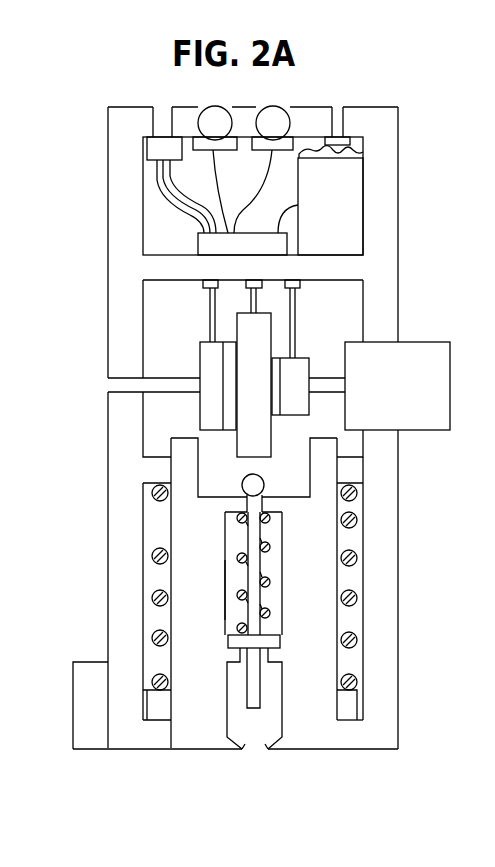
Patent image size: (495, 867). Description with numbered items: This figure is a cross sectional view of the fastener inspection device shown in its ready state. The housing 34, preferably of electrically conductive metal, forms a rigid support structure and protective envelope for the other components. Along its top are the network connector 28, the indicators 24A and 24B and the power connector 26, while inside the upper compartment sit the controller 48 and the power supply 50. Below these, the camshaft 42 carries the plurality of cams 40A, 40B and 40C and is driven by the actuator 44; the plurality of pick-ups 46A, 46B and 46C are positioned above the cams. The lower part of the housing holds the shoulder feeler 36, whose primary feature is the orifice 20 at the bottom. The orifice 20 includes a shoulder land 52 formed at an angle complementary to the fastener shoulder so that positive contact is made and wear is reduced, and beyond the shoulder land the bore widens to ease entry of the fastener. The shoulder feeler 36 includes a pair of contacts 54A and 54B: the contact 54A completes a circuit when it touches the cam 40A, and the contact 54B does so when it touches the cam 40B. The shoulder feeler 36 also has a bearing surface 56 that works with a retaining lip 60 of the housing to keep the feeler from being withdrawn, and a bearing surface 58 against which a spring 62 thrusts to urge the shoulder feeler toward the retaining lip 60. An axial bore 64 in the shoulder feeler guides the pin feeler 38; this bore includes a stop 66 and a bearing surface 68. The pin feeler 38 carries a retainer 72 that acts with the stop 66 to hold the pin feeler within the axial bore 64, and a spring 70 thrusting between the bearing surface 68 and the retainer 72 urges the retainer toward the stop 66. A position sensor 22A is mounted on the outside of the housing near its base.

The orifice 20 is at (260, 737).
The position sensor 22A is at (92, 705).
The indicator 24A is at (222, 85).
The indicator 24B is at (270, 115).
The power connector 26 is at (338, 115).
The network connector 28 is at (163, 117).
The housing 34 is at (118, 455).
The shoulder feeler 36 is at (203, 727).
The pin feeler 38 is at (253, 698).
The cam 40A is at (210, 373).
The cam 40B is at (298, 375).
The cam 40C is at (247, 385).
The camshaft 42 is at (118, 386).
The actuator 44 is at (411, 395).
The pick-up 46A is at (207, 330).
The pick-up 46B is at (335, 314).
The pick-up 46C is at (246, 305).
The controller 48 is at (212, 245).
The power supply 50 is at (342, 216).
The shoulder land 52 is at (243, 751).
The contact 54A is at (197, 442).
The contact 54B is at (292, 442).
The bearing surface 56 is at (357, 725).
The bearing surface 58 is at (355, 688).
The retaining lip 60 is at (152, 728).
The spring 62 is at (150, 595).
The axial bore 64 is at (225, 597).
The stop 66 is at (273, 652).
The bearing surface 68 is at (267, 510).
The spring 70 is at (268, 559).
The retainer 72 is at (228, 641).